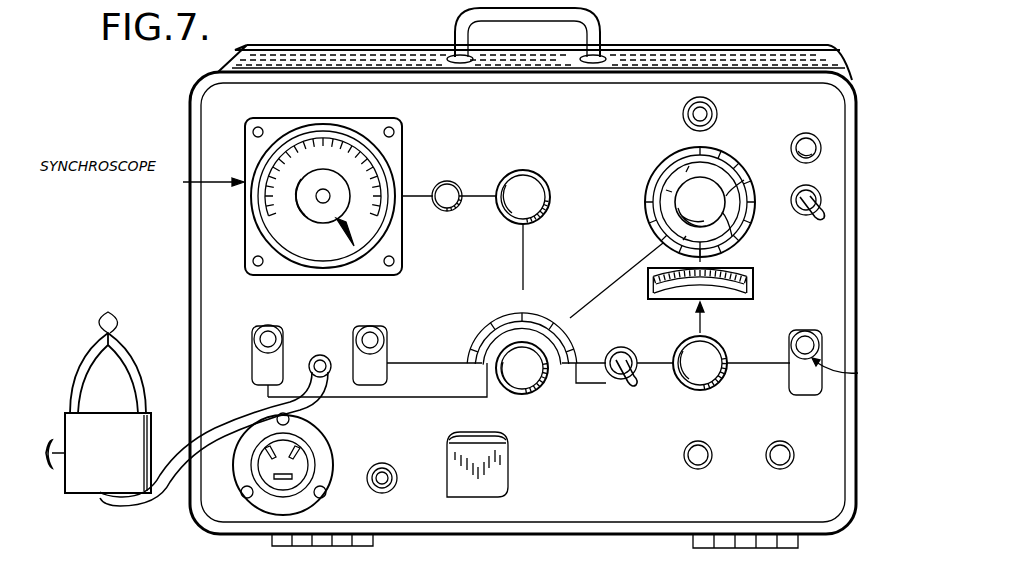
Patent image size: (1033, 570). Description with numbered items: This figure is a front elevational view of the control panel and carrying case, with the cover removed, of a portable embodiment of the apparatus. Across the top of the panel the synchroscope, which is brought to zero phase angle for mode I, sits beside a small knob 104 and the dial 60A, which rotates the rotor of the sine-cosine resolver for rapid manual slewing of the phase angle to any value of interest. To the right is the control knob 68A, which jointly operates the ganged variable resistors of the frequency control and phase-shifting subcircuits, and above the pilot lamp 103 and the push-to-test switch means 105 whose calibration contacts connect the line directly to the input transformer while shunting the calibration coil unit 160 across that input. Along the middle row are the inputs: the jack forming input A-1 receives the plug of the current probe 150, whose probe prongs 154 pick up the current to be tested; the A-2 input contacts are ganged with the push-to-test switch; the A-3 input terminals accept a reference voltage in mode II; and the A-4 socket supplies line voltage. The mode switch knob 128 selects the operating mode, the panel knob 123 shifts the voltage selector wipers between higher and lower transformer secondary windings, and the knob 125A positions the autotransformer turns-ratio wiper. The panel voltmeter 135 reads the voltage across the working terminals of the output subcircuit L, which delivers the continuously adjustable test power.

The pilot lamp 103 is at (822, 152).
The knob 104 is at (452, 185).
The push-to-test switch means 105 is at (821, 201).
The panel knob 123 is at (637, 381).
The knob 125A is at (706, 352).
The mode switch knob 128 is at (545, 390).
The panel voltmeter 135 is at (753, 290).
The current probe 150 is at (125, 466).
The probe prongs 154 is at (122, 310).
The calibration coil unit 160 is at (522, 461).
The dial 60A is at (536, 180).
The control knob 68A is at (718, 192).
The input A-1 is at (320, 354).
The input contacts A-2 is at (257, 325).
The input terminals A-3 is at (395, 312).
The line voltage input A-4 is at (323, 442).
The mode I is at (367, 113).
The working or test output subcircuit L is at (845, 362).